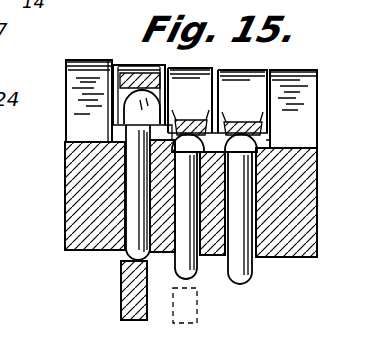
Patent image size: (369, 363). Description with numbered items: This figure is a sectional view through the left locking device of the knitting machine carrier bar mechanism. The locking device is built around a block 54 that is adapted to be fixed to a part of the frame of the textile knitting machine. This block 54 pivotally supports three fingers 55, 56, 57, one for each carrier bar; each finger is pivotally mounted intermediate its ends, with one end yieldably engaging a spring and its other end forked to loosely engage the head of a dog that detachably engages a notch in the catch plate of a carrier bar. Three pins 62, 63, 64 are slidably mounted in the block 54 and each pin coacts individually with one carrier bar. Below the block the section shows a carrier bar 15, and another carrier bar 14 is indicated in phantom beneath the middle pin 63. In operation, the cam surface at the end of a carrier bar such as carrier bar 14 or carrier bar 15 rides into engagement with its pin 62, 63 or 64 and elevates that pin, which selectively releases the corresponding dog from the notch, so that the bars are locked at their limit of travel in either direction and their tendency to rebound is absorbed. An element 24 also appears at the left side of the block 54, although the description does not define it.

The carrier bar 14 is at (197, 326).
The carrier bar 15 is at (132, 318).
The side block 24 is at (65, 112).
The block 54 is at (65, 176).
The finger 55 is at (133, 63).
The finger 56 is at (190, 110).
The finger 57 is at (242, 111).
The pin 62 is at (97, 252).
The pin 63 is at (193, 275).
The pin 64 is at (252, 278).